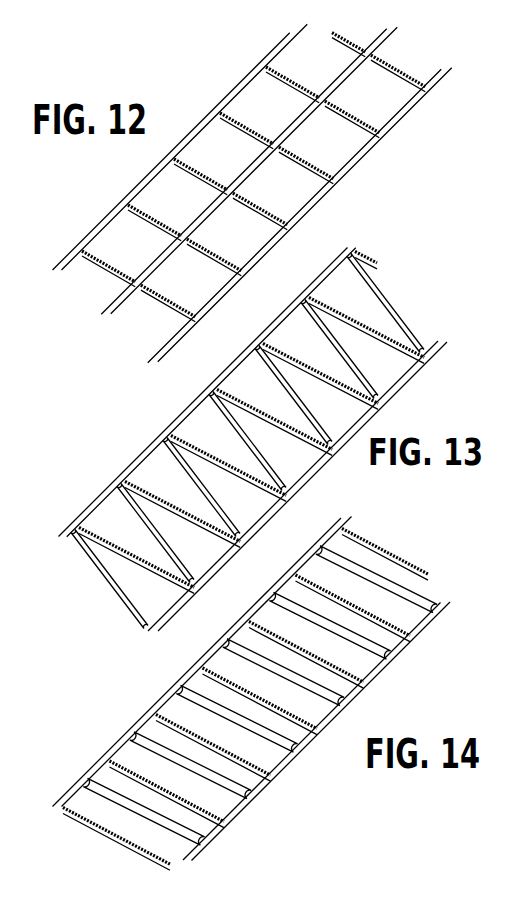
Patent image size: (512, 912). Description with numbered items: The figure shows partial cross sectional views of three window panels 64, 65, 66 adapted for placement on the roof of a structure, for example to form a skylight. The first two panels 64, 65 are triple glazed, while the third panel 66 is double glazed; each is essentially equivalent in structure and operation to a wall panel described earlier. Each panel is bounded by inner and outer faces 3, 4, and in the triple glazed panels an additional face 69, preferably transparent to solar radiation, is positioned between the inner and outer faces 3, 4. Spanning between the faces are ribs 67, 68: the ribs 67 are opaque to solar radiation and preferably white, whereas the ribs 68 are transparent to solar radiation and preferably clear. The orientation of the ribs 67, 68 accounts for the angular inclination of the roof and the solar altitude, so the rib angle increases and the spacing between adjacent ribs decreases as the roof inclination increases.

In FIG. 12, the inner face 3 is at (418, 103).
In FIG. 13, the inner face 3 is at (332, 454).
In FIG. 14, the inner face 3 is at (399, 655).
In FIG. 12, the outer face 4 is at (220, 103).
In FIG. 13, the outer face 4 is at (162, 433).
In FIG. 14, the outer face 4 is at (215, 645).
In FIG. 12, the roof panel 64 is at (378, 147).
In FIG. 13, the roof panel 65 is at (119, 465).
In FIG. 14, the roof panel 66 is at (116, 741).
In FIG. 12, the ribs 67 is at (312, 172).
In FIG. 13, the ribs 67 is at (378, 328).
In FIG. 14, the ribs 67 is at (384, 550).
In FIG. 13, the ribs 68 is at (378, 285).
In FIG. 14, the ribs 68 is at (410, 601).
In FIG. 12, the additional face 69 is at (120, 305).